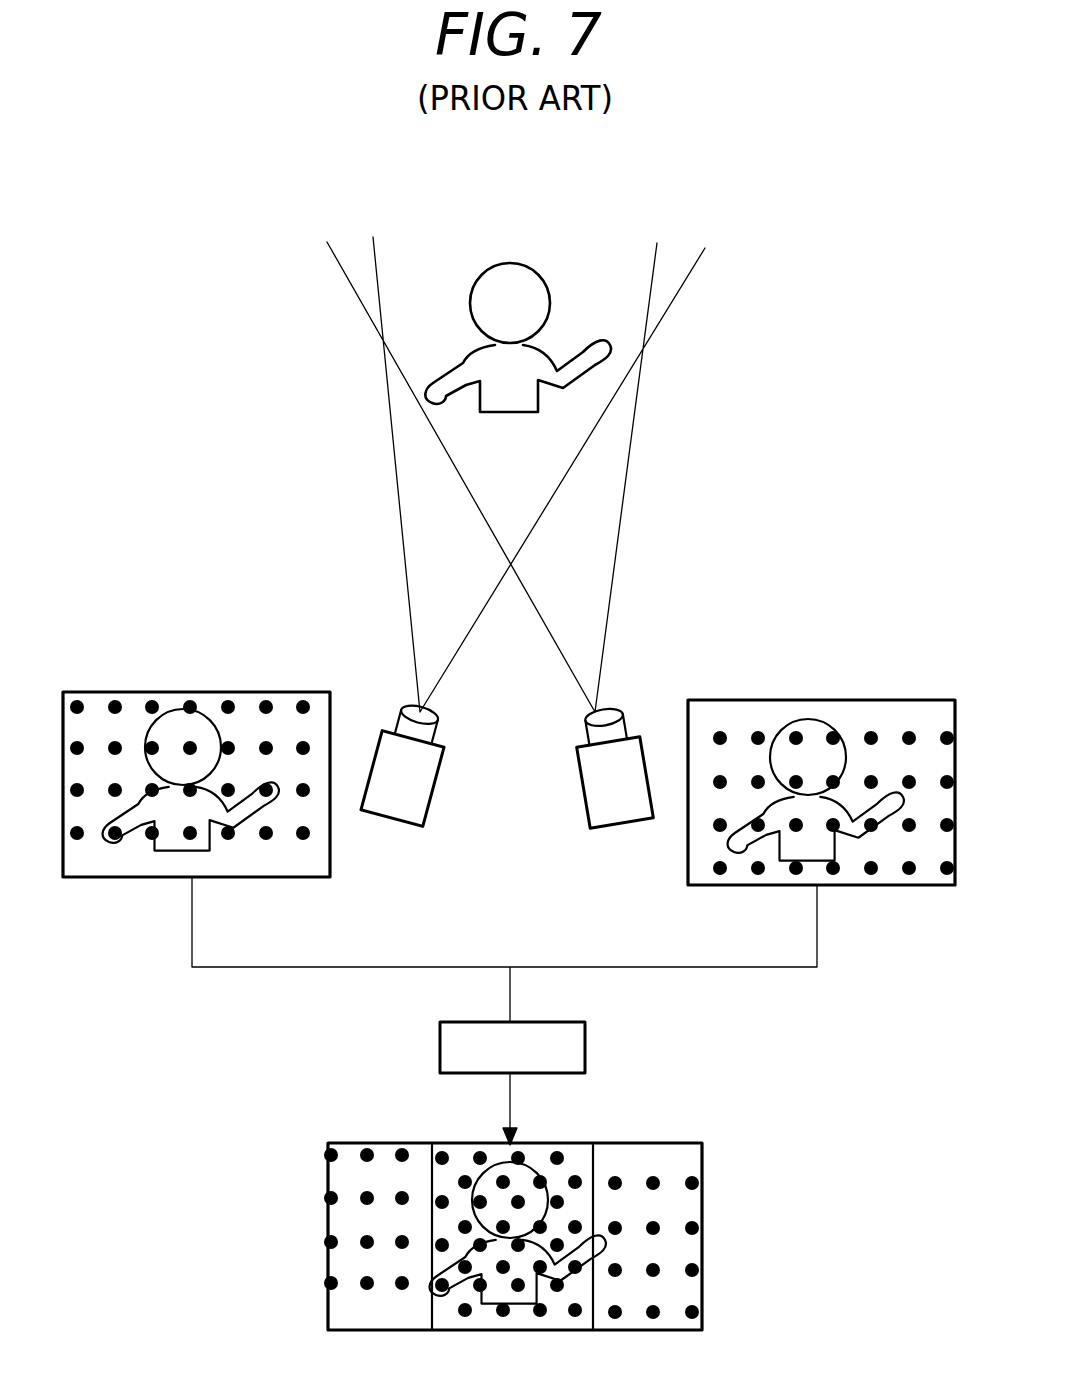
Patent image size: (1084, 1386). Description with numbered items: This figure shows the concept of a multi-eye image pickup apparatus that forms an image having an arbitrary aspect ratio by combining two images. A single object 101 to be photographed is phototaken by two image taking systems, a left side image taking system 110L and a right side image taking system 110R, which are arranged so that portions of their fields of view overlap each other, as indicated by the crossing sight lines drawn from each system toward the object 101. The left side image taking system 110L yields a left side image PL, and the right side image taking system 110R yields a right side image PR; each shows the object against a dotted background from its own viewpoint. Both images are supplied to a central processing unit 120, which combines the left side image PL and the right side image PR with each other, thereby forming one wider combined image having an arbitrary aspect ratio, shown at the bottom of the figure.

The object to be photographed 101 is at (507, 277).
The left side image taking system 110L is at (397, 807).
The right side image taking system 110R is at (627, 810).
The central processing unit (CPU) 120 is at (585, 1044).
The left side image PL is at (252, 692).
The right side image PR is at (875, 700).